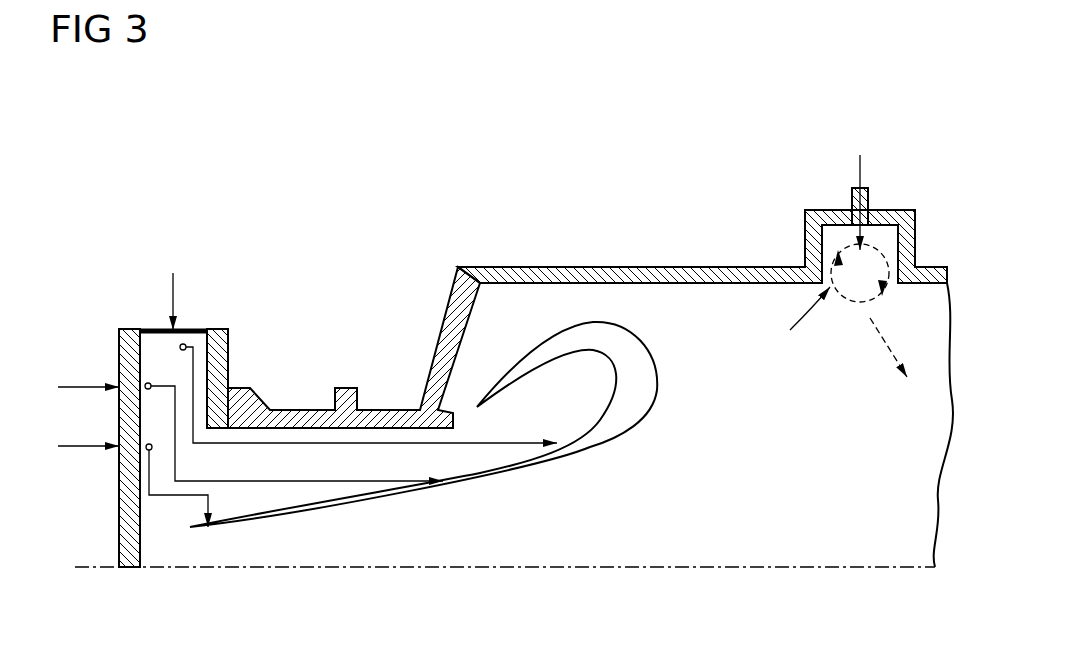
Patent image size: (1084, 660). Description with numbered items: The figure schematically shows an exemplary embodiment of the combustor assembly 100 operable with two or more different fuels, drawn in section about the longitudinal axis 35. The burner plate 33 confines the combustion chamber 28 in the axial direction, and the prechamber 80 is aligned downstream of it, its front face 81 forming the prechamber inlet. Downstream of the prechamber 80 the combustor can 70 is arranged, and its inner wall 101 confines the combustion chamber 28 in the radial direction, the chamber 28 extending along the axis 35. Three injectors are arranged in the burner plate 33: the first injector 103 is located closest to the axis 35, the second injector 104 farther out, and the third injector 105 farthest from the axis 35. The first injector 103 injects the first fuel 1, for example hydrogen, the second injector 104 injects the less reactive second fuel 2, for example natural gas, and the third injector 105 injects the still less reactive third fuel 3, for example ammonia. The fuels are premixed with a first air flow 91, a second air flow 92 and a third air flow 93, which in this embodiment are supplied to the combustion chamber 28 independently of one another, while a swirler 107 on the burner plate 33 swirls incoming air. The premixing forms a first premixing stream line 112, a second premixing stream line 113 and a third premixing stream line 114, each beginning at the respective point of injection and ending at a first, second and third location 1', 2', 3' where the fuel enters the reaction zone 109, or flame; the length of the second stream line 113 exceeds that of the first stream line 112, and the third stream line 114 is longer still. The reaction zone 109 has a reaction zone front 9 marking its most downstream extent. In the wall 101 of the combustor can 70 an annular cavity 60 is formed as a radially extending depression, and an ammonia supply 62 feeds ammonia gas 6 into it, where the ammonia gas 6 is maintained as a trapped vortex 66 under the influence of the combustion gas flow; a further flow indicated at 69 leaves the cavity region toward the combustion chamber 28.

The combustor assembly 100 is at (883, 82).
The ammonia gas 6 is at (857, 162).
The ammonia supply 62 is at (857, 198).
The combustor can 70 is at (675, 253).
The annular cavity 60 is at (802, 329).
The trapped vortex 66 is at (860, 292).
The outflow 69 is at (873, 343).
The combustion chamber 28 is at (523, 331).
The reaction zone front 9 is at (657, 390).
The reaction zone 109 is at (622, 437).
The prechamber 80 is at (293, 330).
The inner wall 101 is at (383, 423).
The third premixing stream line 114 is at (287, 443).
The second premixing stream line 113 is at (317, 482).
The first premixing stream line 112 is at (173, 497).
The third fuel 3 is at (368, 379).
The second fuel 2 is at (294, 434).
The first fuel 1 is at (177, 504).
The third location 3' is at (567, 406).
The second location 2' is at (464, 509).
The first location 1' is at (236, 544).
The third injector 105 is at (185, 344).
The second injector 104 is at (146, 383).
The first injector 103 is at (146, 444).
The third air flow 93 is at (173, 273).
The swirler 107 is at (158, 305).
The front face 81 is at (150, 342).
The second air flow 92 is at (72, 387).
The first air flow 91 is at (75, 447).
The burner plate 33 is at (120, 528).
The longitudinal axis 35 is at (83, 567).